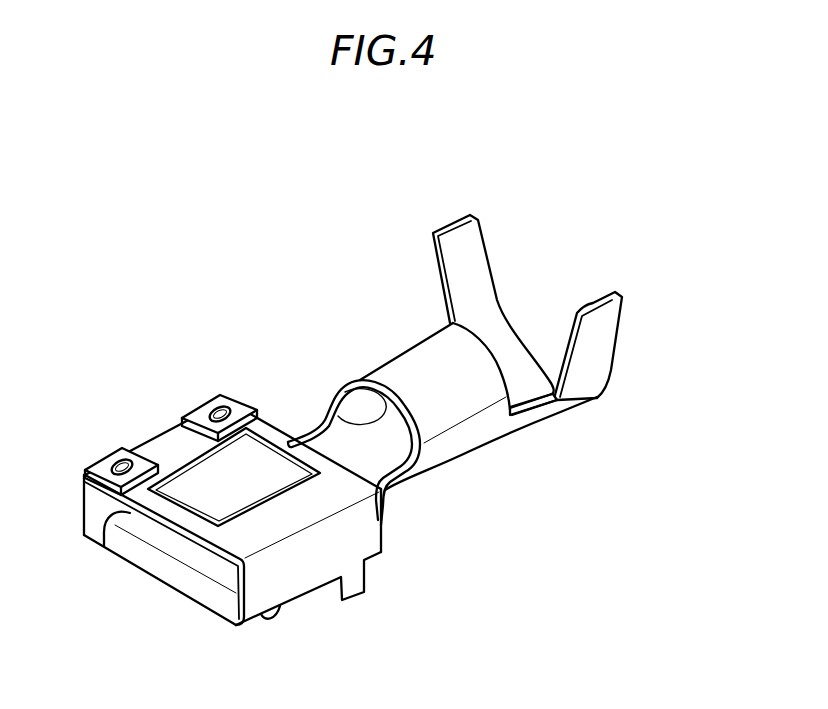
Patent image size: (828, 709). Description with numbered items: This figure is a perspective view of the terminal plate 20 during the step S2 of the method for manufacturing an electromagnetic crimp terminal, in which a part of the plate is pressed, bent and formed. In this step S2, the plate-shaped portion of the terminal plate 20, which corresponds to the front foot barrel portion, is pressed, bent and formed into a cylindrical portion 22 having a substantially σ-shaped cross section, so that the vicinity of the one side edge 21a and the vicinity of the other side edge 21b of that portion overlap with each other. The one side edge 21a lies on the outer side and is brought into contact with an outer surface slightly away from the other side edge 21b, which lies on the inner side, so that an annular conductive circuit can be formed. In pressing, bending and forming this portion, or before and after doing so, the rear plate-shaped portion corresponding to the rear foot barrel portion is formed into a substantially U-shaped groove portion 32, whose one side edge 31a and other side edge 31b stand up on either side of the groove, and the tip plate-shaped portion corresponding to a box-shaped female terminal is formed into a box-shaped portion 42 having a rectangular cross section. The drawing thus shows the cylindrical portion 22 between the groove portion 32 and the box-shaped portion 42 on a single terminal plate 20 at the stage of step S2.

The terminal plate 20 is at (317, 176).
The one side edge 21a is at (357, 428).
The other side edge 21b is at (342, 422).
The cylindrical portion 22 is at (422, 377).
The one side edge 31a is at (598, 303).
The other side edge 31b is at (437, 230).
The groove portion 32 is at (507, 350).
The box-shaped portion 42 is at (182, 515).
The step of pressing, bending and forming S2 is at (94, 296).